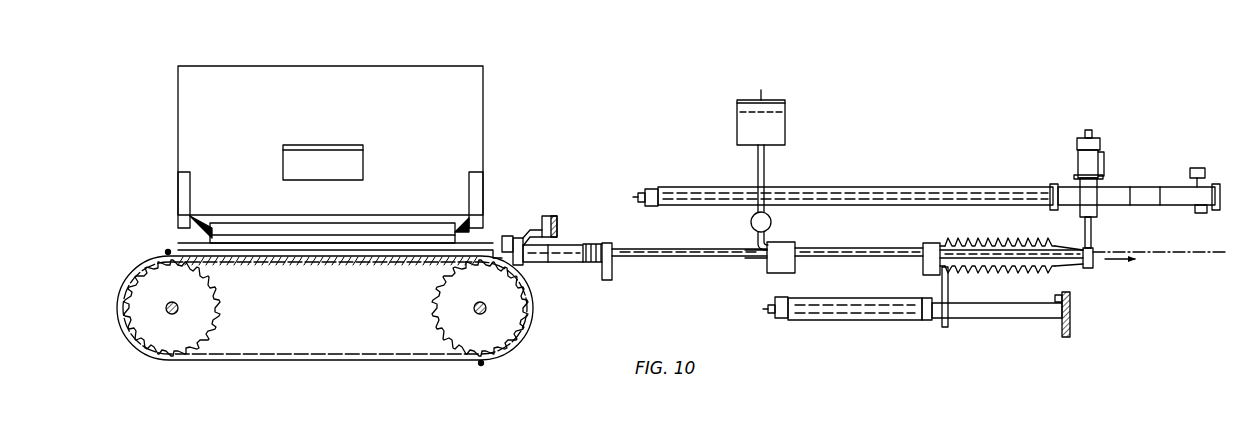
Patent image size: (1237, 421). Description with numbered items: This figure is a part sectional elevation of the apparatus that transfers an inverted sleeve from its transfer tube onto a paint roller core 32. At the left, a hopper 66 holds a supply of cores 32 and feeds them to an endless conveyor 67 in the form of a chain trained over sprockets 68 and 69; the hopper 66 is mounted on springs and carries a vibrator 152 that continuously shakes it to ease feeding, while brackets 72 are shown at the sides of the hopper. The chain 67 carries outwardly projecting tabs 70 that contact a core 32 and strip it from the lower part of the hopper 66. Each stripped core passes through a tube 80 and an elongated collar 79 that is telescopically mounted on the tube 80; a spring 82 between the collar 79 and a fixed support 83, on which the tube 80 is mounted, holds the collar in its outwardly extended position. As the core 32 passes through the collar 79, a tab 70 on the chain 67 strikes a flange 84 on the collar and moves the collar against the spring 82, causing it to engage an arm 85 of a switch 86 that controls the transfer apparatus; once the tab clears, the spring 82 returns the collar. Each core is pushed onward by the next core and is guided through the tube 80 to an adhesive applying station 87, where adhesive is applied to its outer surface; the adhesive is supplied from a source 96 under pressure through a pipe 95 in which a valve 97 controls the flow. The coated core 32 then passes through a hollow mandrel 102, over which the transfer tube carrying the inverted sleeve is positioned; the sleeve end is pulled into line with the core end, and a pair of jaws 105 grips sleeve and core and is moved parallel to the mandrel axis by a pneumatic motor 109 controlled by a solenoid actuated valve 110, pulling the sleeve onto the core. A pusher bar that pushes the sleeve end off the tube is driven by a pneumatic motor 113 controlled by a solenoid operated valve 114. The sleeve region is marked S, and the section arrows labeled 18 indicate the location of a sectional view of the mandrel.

The hopper 66 is at (330, 140).
The vibrator 152 is at (363, 162).
The paint roller core 32 is at (325, 252).
The support bracket 72 is at (178, 225).
The outwardly projecting tabs 70 is at (165, 251).
The sprocket 68 is at (218, 302).
The sprocket 69 is at (446, 308).
The endless conveyor 67 is at (290, 358).
The flange 84 is at (519, 238).
The arm 85 is at (530, 230).
The switch 86 is at (555, 216).
The elongated collar 79 is at (565, 244).
The spring 82 is at (596, 244).
The tube 80 is at (590, 265).
The fixed support 83 is at (611, 270).
The adhesive applying station 87 is at (760, 263).
The source of adhesive 96 is at (785, 128).
The pipe 95 is at (766, 172).
The valve 97 is at (750, 222).
The pneumatic motor 109 is at (846, 190).
The solenoid actuated valve 110 is at (650, 188).
The jaws 105 is at (1093, 236).
The hollow mandrel 102 is at (1040, 247).
The screw S is at (982, 245).
The section line 18 is at (940, 222).
The pneumatic motor 113 is at (828, 298).
The solenoid operated valve 114 is at (778, 318).